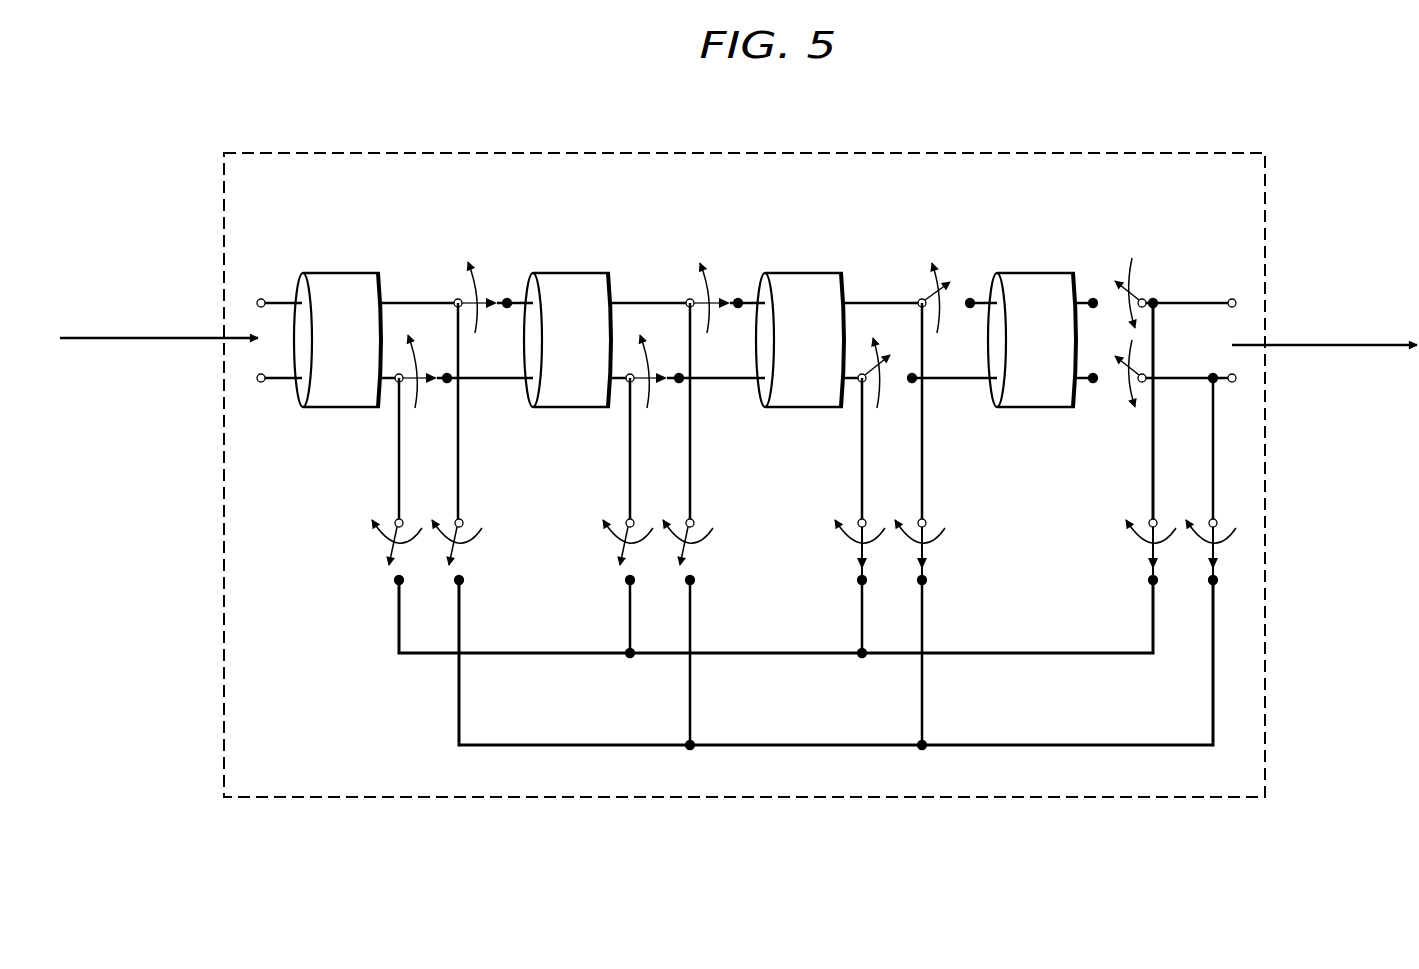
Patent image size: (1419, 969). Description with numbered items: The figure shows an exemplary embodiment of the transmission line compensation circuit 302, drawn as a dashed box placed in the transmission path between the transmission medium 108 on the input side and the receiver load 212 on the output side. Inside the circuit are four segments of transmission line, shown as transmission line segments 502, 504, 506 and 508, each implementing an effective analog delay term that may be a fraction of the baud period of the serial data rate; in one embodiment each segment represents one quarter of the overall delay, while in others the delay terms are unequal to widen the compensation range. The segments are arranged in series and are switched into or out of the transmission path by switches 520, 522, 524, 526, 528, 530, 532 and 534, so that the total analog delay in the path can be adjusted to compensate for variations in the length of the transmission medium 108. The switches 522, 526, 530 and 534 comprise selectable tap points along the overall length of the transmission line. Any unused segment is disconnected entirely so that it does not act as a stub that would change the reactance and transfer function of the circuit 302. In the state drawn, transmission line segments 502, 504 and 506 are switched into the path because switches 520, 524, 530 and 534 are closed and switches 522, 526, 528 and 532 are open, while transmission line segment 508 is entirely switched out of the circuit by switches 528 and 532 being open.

The transmission line compensation circuit 302 is at (770, 152).
The transmission medium 108 is at (159, 289).
The receiver load 212 is at (1324, 294).
The transmission line segment 502 is at (343, 272).
The transmission line segment 504 is at (577, 272).
The transmission line segment 506 is at (808, 272).
The transmission line segment 508 is at (1038, 272).
The switch 520 is at (476, 243).
The switch 522 is at (496, 551).
The switch 524 is at (708, 243).
The switch 526 is at (727, 551).
The switch 528 is at (940, 243).
The switch 530 is at (960, 551).
The switch 532 is at (1141, 243).
The switch 534 is at (1114, 551).